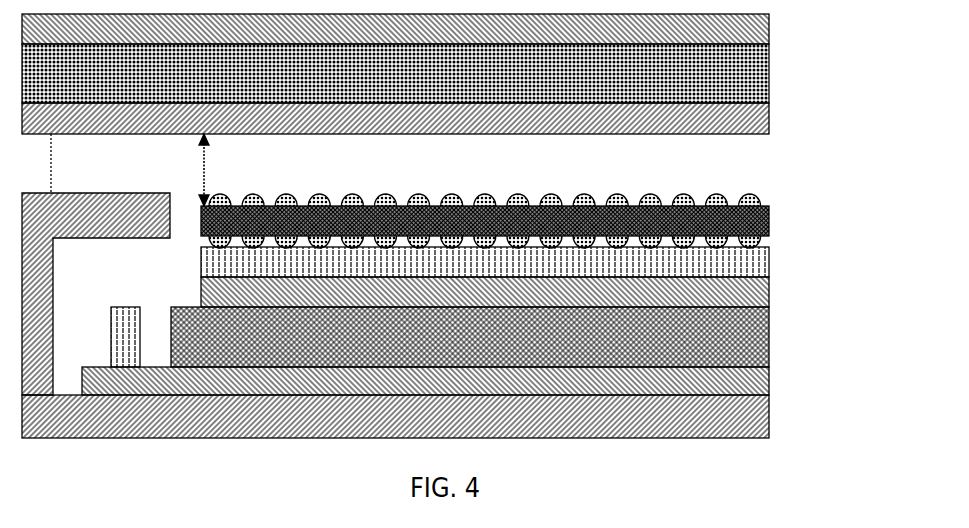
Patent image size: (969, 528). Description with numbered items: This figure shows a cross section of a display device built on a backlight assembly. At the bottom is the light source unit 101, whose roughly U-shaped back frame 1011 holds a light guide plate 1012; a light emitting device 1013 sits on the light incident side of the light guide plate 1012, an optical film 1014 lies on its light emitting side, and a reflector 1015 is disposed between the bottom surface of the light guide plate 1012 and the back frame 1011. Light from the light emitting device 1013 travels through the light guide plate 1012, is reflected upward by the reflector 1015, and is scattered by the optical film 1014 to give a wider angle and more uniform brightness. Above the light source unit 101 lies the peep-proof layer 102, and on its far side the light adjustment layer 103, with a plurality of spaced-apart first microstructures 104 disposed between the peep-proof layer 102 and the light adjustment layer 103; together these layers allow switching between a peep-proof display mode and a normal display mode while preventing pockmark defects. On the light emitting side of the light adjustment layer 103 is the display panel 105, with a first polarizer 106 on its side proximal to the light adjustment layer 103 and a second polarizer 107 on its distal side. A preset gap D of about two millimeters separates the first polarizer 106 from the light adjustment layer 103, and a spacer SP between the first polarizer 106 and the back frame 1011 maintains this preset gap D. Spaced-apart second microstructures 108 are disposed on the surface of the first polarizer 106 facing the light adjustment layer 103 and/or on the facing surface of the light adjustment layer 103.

The light source unit 101 is at (463, 357).
The back frame 1011 is at (769, 419).
The light guide plate 1012 is at (769, 339).
The light emitting device 1013 is at (111, 337).
The optical film 1014 is at (517, 292).
The reflector 1015 is at (769, 382).
The peep-proof layer 102 is at (769, 262).
The light adjustment layer 103 is at (769, 219).
The first microstructures 104 is at (769, 238).
The second microstructures 108 is at (762, 200).
The display panel 105 is at (769, 68).
The first polarizer 106 is at (769, 118).
The second polarizer 107 is at (769, 29).
The spacer SP is at (53, 164).
The preset gap D is at (211, 170).